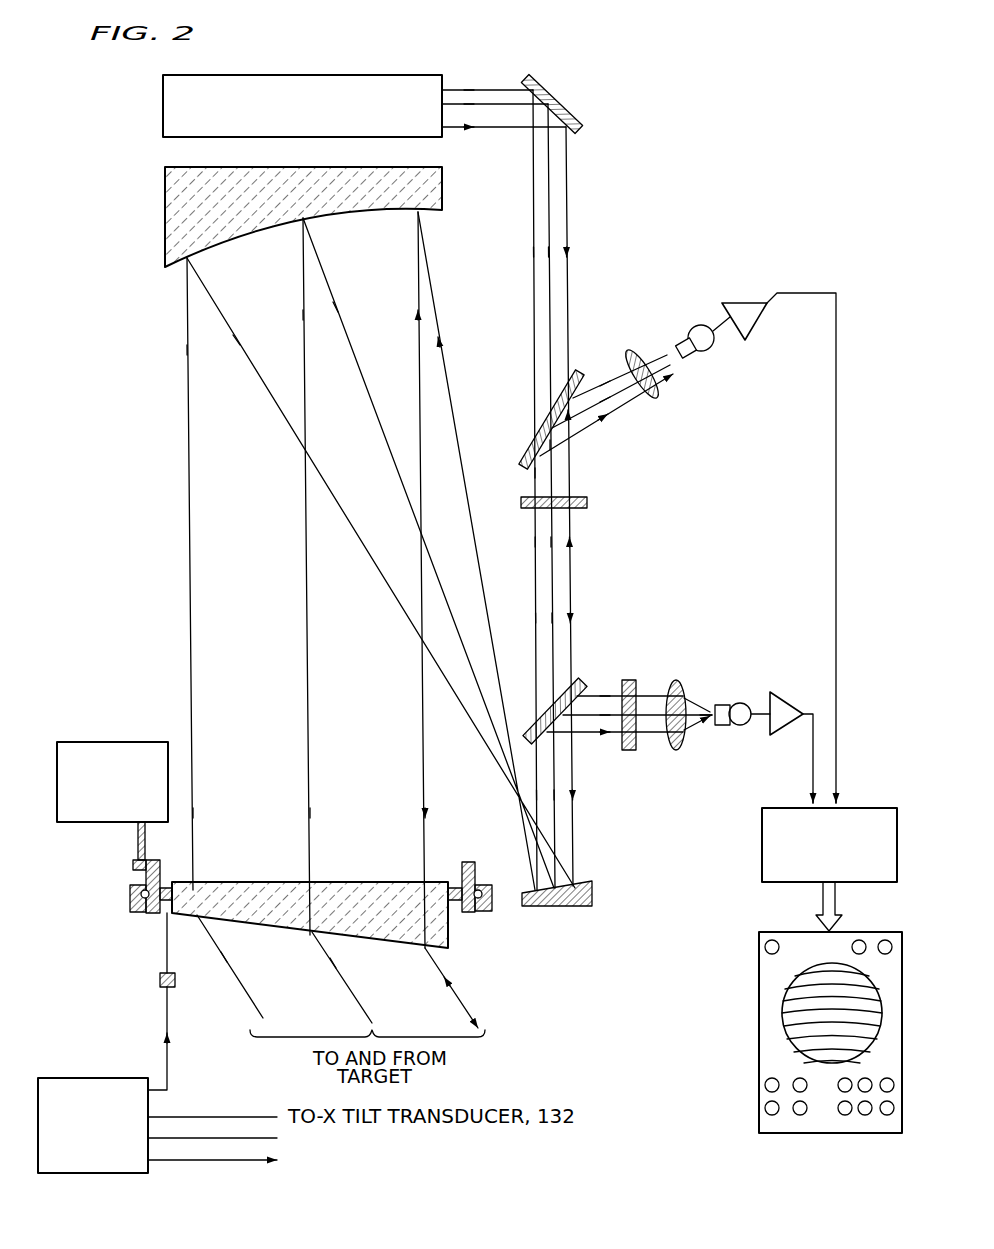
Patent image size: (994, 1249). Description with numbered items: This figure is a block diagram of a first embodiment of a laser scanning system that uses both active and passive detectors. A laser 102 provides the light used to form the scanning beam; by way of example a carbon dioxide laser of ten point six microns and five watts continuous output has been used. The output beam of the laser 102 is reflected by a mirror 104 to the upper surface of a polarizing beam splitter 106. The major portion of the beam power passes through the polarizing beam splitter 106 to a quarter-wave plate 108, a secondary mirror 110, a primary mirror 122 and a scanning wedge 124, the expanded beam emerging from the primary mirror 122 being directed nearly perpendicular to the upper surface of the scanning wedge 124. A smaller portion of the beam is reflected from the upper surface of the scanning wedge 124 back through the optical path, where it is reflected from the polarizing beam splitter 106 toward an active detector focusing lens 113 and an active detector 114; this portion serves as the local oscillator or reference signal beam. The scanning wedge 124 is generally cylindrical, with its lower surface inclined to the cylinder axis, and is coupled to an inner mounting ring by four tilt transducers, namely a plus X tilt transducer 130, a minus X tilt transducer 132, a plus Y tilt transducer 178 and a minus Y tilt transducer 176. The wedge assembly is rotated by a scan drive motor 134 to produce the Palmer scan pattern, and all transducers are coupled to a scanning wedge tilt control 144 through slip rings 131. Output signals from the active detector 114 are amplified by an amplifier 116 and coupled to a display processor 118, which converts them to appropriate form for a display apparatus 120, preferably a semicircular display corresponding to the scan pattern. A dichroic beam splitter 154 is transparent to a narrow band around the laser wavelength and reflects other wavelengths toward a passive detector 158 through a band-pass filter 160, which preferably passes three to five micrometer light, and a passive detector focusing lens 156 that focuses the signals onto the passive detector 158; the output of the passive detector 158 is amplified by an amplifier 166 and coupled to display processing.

The laser 102 is at (366, 80).
The mirror 104 is at (553, 92).
The polarizing beam splitter 106 is at (577, 372).
The quarter-wave plate 108 is at (588, 504).
The secondary mirror 110 is at (582, 888).
The active detector focusing lens 113 is at (650, 400).
The active detector 114 is at (711, 350).
The amplifier 116 is at (728, 302).
The display processor 118 is at (762, 838).
The display apparatus 120 is at (767, 1136).
The primary mirror 122 is at (165, 190).
The scanning wedge 124 is at (263, 882).
The +X tilt transducer 130 is at (158, 908).
The slip rings 131 is at (160, 983).
The -X tilt transducer 132 is at (455, 906).
The scan drive motor 134 is at (125, 742).
The scanning wedge tilt control 144 is at (57, 1078).
The dichroic beam splitter 154 is at (578, 680).
The passive detector focusing lens 156 is at (691, 685).
The passive detector 158 is at (734, 727).
The band-pass filter 160 is at (623, 745).
The amplifier 166 is at (789, 711).
The -Y tilt transducer 176 is at (432, 1141).
The +Y tilt transducer 178 is at (431, 1161).